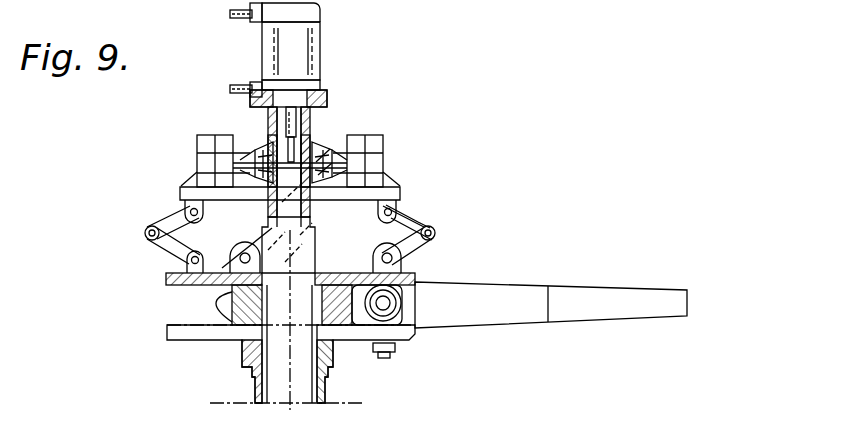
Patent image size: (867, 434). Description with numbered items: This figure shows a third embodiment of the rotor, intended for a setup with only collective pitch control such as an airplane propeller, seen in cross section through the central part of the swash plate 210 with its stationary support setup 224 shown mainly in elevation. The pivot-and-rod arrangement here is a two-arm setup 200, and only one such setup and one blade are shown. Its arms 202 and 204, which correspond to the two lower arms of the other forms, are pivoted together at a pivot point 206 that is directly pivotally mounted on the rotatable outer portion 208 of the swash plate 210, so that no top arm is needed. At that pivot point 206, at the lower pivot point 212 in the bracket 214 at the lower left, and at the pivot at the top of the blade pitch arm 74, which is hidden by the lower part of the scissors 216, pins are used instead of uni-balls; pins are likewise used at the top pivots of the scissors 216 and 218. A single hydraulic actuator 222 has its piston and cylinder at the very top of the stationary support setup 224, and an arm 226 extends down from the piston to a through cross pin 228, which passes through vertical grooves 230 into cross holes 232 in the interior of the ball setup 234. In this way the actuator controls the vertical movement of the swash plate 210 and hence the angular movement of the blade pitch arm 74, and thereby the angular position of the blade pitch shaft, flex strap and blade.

The blade pitch arm 74 is at (402, 265).
The two-arm pivot-and-rod setup 200 is at (400, 217).
The arm 202 is at (320, 199).
The arm 204 is at (262, 225).
The pivot point 206 is at (395, 168).
The rotatable outer portion 208 is at (385, 144).
The swash plate 210 is at (327, 135).
The lower pivot point 212 is at (240, 275).
The bracket 214 is at (240, 292).
The scissors 216 is at (510, 236).
The scissors 218 is at (145, 232).
The hydraulic actuator 222 is at (320, 54).
The stationary support setup 224 is at (252, 100).
The arm 226 is at (288, 127).
The through cross pin 228 is at (258, 163).
The vertical grooves 230 is at (262, 175).
The cross holes 232 is at (333, 157).
The ball setup 234 is at (320, 137).